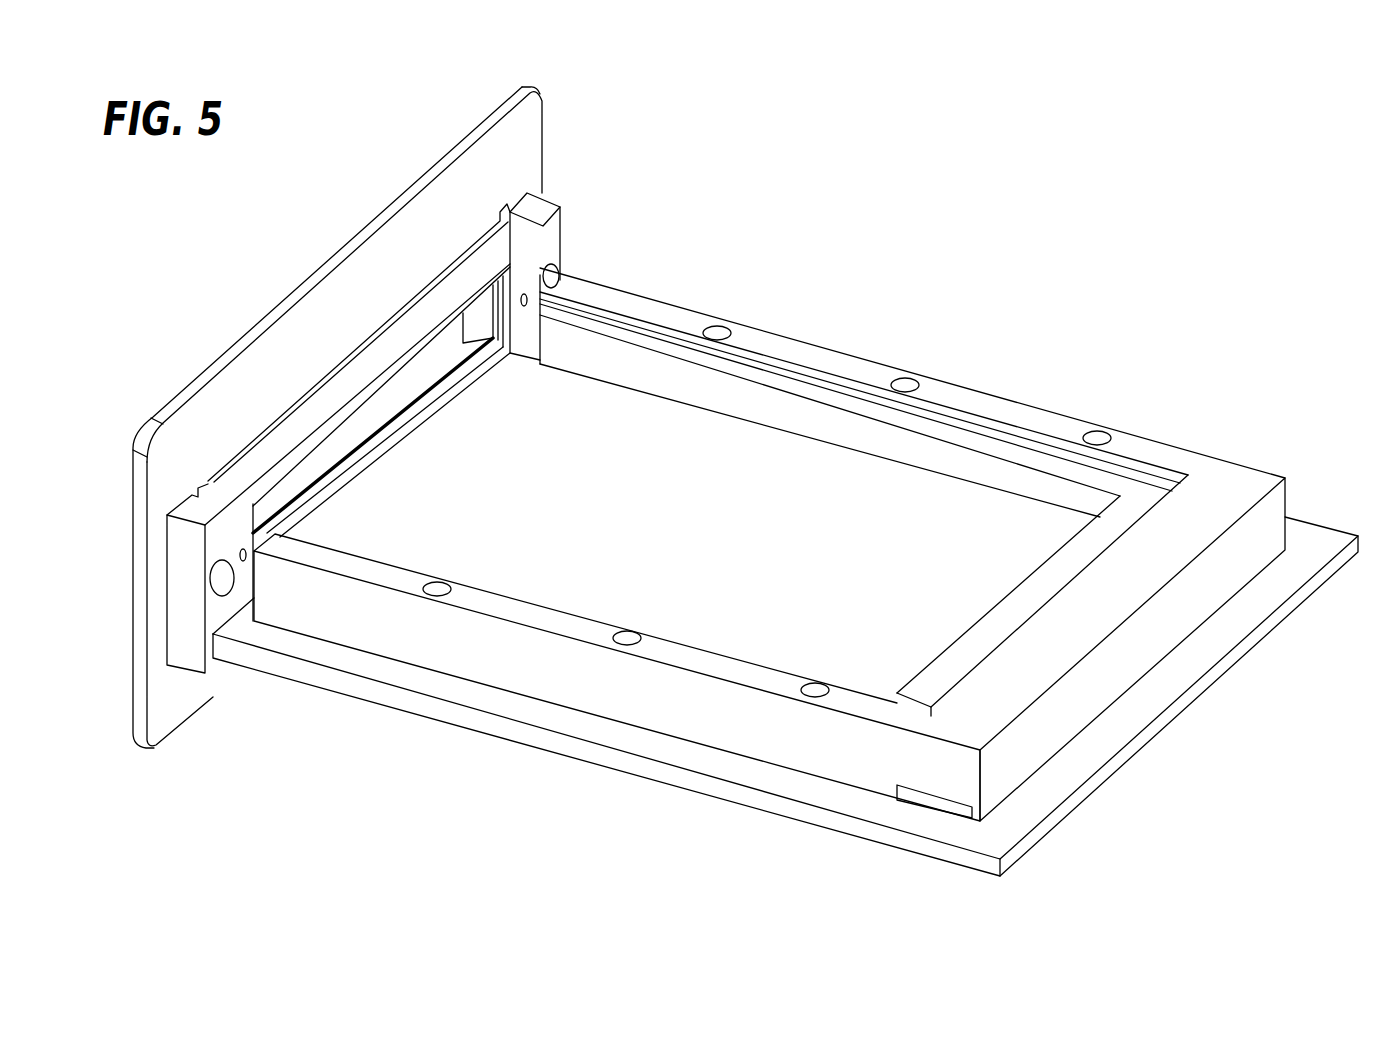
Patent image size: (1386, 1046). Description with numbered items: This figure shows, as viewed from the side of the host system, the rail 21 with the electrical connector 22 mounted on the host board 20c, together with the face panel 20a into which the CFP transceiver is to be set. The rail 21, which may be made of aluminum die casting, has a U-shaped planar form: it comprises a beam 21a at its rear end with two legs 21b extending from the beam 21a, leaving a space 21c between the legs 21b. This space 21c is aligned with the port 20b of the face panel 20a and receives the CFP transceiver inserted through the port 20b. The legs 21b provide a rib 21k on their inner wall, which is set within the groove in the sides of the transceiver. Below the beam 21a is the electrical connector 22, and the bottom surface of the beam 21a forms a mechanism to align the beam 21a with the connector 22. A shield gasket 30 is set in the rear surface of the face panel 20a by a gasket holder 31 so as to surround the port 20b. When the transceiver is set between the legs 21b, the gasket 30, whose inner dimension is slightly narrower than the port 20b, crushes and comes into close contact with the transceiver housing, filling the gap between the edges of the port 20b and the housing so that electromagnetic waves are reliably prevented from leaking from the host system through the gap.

The face panel 20a is at (520, 161).
The port 20b is at (397, 390).
The host board 20c is at (1305, 548).
The rail 21 is at (1222, 485).
The beam 21a is at (990, 708).
The legs 21b is at (413, 624).
The space 21c is at (697, 500).
The rib 21k is at (883, 410).
The electrical connector 22 is at (1118, 517).
The shield gasket 30 is at (353, 460).
The gasket holder 31 is at (548, 247).